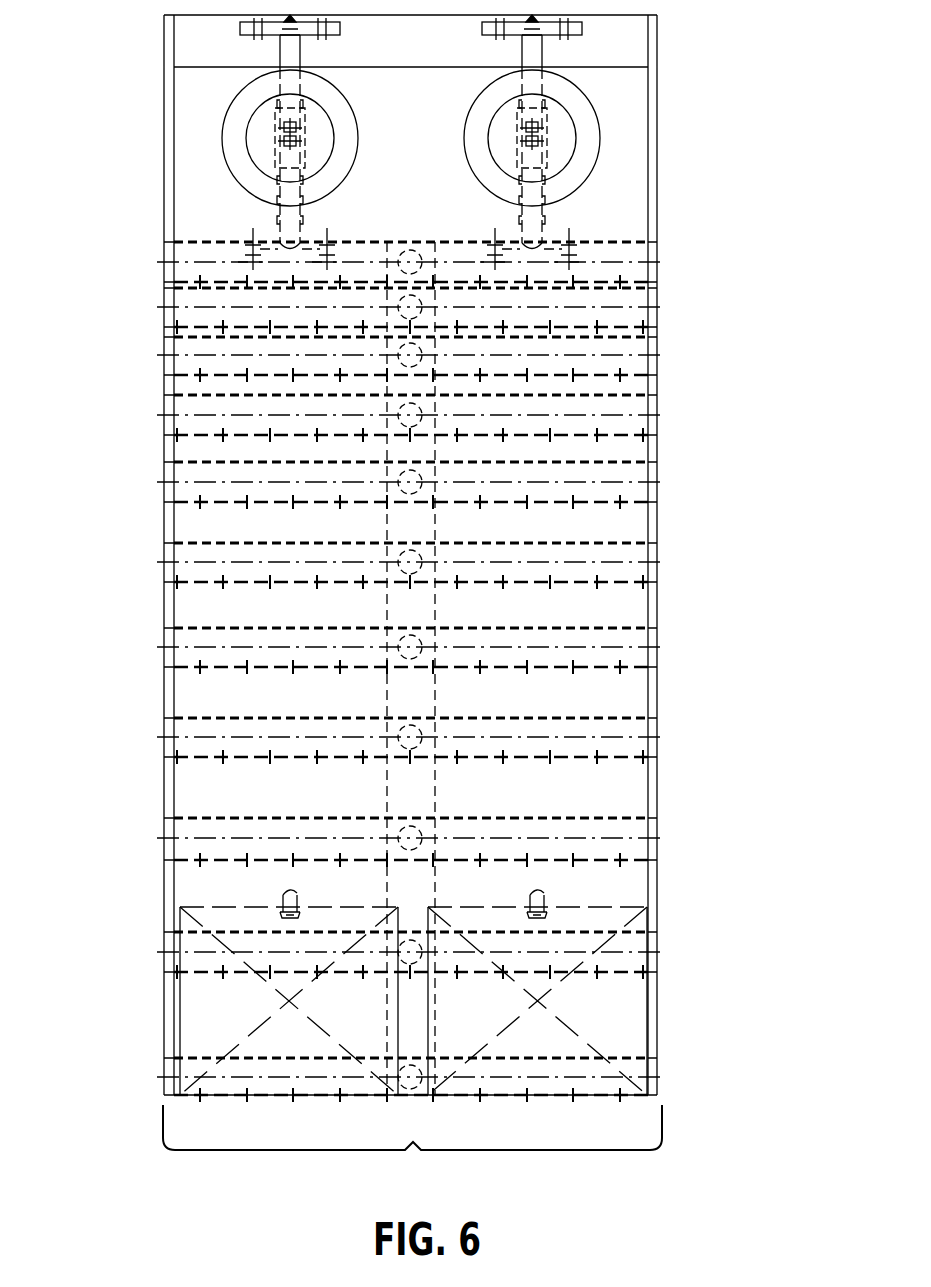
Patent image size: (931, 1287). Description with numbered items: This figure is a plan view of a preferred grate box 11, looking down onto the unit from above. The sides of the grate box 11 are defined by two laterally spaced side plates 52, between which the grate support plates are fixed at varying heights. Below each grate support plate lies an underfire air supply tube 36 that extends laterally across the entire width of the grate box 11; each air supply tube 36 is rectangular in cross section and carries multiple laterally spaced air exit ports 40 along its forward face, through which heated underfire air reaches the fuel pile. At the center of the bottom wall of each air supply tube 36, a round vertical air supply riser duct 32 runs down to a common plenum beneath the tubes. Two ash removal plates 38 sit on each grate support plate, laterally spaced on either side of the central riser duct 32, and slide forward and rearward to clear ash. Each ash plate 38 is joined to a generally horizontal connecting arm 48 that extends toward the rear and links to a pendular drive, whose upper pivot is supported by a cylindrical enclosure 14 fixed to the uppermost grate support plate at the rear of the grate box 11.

The grate box 11 is at (412, 605).
The cylindrical enclosure 14 is at (237, 94).
The air supply riser duct 32 is at (420, 485).
The underfire air supply tube 36 is at (635, 410).
The ash removal plate 38 is at (290, 1000).
The air exit port 40 is at (247, 375).
The connecting arm 48 is at (285, 893).
The side plate 52 is at (166, 606).